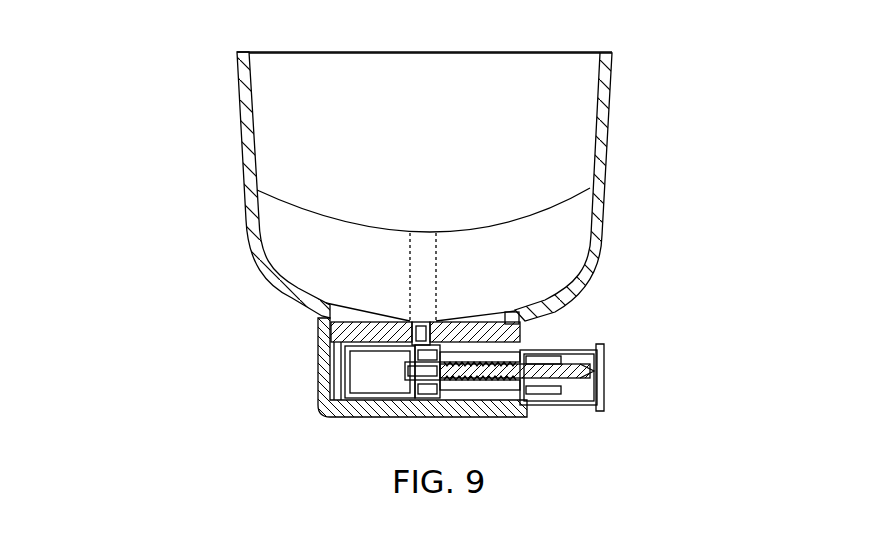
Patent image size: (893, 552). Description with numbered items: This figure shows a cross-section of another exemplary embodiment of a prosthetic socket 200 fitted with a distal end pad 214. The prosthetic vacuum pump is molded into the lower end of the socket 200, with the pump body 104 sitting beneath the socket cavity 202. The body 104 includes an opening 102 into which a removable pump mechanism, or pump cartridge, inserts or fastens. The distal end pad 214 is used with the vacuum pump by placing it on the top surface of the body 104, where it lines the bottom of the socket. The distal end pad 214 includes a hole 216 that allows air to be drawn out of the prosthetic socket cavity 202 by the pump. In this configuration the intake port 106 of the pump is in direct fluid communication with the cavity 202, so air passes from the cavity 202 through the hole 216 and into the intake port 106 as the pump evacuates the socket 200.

The prosthetic socket 200 is at (603, 108).
The prosthetic socket cavity 202 is at (441, 142).
The distal end pad 214 is at (560, 245).
The hole 216 is at (405, 265).
The intake port 106 is at (347, 336).
The body 104 is at (340, 340).
The opening 102 is at (523, 352).